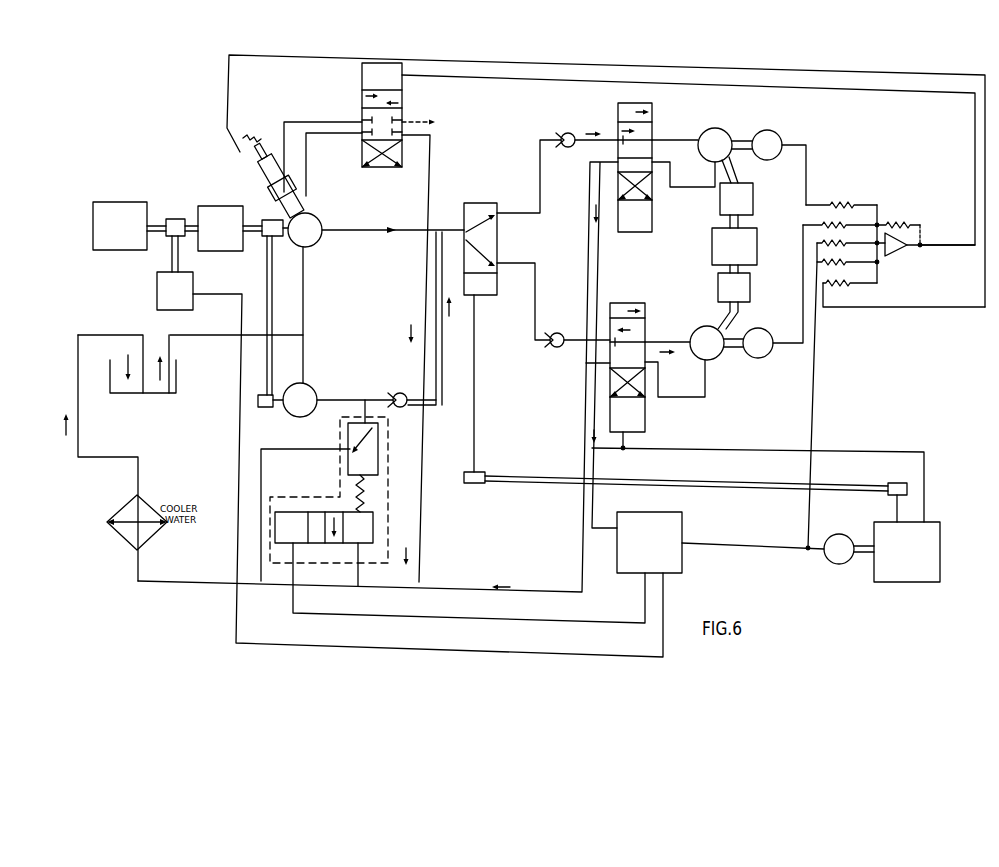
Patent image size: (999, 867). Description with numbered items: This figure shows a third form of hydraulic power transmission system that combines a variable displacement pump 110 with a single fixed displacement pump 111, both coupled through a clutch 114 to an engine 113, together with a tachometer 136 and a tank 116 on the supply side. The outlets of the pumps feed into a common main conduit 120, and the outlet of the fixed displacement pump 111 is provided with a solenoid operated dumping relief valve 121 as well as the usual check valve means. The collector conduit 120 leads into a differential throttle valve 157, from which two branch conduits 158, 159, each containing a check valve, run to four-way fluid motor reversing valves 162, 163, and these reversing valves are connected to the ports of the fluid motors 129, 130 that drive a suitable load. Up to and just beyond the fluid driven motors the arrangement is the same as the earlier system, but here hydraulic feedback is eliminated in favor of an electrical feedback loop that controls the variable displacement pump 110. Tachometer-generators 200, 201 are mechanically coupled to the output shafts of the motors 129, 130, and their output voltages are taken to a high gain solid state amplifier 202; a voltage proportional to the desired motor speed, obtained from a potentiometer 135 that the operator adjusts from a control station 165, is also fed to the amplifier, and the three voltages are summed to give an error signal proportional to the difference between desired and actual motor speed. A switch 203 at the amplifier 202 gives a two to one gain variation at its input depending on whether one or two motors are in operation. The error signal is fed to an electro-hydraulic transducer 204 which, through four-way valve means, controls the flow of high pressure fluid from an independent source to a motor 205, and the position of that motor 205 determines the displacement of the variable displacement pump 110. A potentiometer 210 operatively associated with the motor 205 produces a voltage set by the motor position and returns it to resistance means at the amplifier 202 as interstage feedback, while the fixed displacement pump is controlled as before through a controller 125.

The engine 113 is at (147, 198).
The clutch 114 is at (237, 251).
The tachometer 136 is at (410, 446).
The tank 116 is at (172, 386).
The variable displacement pump 110 is at (307, 221).
The fixed displacement pump 111 is at (318, 395).
The motor 205 is at (264, 197).
The potentiometer 210 is at (243, 141).
The electro-hydraulic transducer 204 is at (362, 88).
The main conduit 120 is at (444, 231).
The differential throttle valve 157 is at (497, 252).
The branch conduit 158 is at (540, 190).
The branch conduit 159 is at (535, 296).
The four-way fluid motor reversing valve 162 is at (652, 130).
The four-way fluid motor reversing valve 163 is at (643, 400).
The fluid motor 129 is at (718, 128).
The fluid motor 130 is at (716, 358).
The tachometer-generator 200 is at (782, 138).
The tachometer-generator 201 is at (765, 357).
The high gain solid state amplifier 202 is at (893, 258).
The switch 203 is at (816, 262).
The solenoid operated dumping relief valve 121 is at (342, 478).
The controller 125 is at (688, 521).
The potentiometer 135 is at (836, 566).
The control station 165 is at (940, 578).